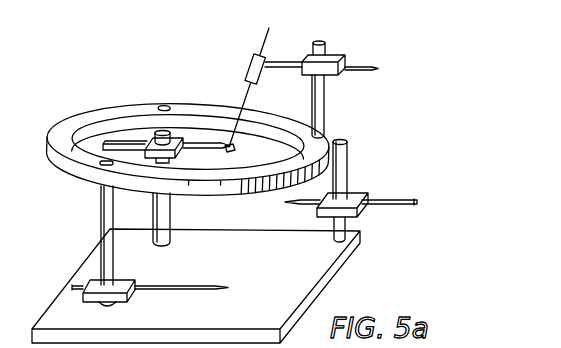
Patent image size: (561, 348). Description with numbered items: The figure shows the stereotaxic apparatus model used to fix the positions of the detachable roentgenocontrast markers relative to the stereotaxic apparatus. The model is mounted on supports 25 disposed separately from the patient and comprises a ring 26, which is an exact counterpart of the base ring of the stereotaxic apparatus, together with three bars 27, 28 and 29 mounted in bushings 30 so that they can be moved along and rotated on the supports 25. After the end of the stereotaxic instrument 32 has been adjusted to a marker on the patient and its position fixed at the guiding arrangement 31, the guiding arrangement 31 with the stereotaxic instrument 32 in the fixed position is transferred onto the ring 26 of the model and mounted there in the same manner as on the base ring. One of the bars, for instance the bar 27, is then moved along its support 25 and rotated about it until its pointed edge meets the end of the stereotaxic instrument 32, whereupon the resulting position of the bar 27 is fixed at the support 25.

The supports 25 is at (167, 140).
The ring 26 is at (73, 129).
The bar 27 is at (96, 166).
The bar 28 is at (72, 287).
The bar 29 is at (393, 200).
The bushings 30 is at (150, 143).
The guiding arrangement 31 is at (330, 57).
The stereotaxic instrument 32 is at (269, 31).